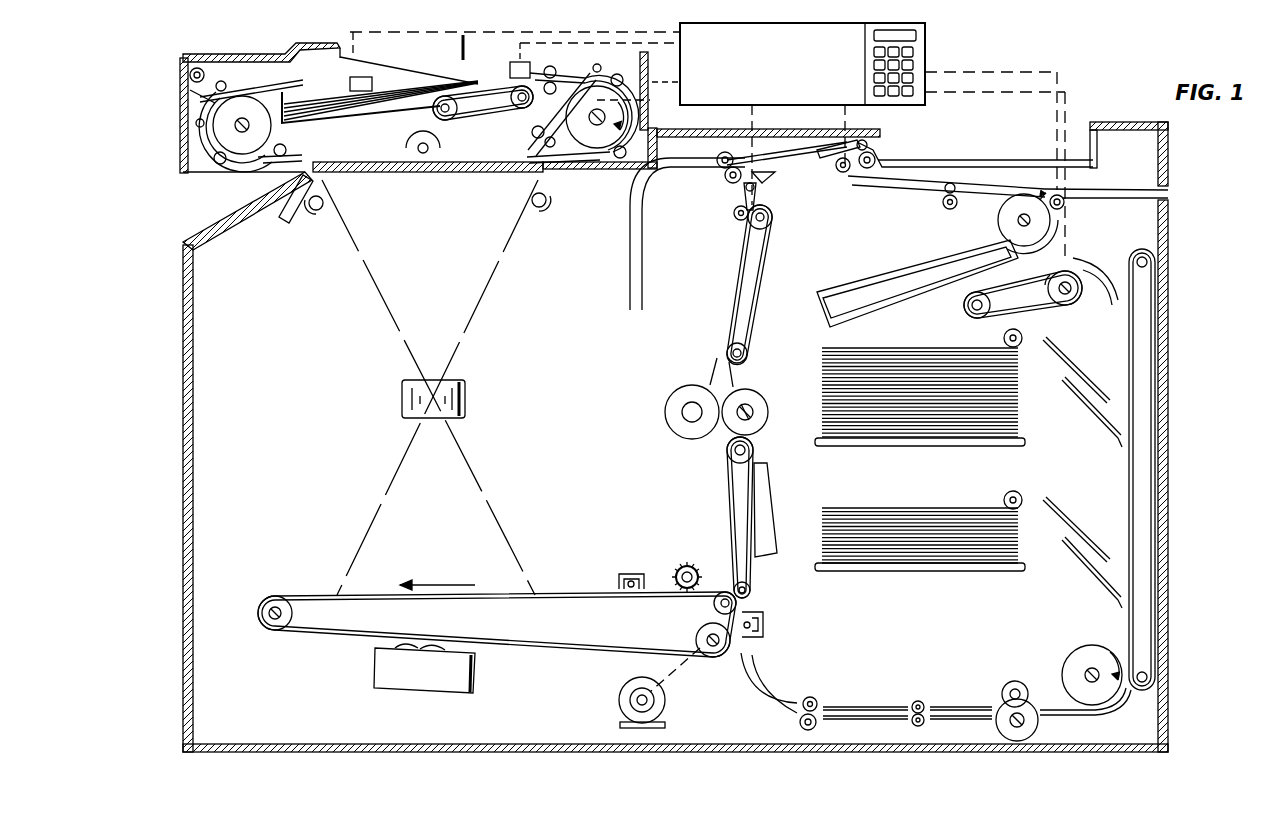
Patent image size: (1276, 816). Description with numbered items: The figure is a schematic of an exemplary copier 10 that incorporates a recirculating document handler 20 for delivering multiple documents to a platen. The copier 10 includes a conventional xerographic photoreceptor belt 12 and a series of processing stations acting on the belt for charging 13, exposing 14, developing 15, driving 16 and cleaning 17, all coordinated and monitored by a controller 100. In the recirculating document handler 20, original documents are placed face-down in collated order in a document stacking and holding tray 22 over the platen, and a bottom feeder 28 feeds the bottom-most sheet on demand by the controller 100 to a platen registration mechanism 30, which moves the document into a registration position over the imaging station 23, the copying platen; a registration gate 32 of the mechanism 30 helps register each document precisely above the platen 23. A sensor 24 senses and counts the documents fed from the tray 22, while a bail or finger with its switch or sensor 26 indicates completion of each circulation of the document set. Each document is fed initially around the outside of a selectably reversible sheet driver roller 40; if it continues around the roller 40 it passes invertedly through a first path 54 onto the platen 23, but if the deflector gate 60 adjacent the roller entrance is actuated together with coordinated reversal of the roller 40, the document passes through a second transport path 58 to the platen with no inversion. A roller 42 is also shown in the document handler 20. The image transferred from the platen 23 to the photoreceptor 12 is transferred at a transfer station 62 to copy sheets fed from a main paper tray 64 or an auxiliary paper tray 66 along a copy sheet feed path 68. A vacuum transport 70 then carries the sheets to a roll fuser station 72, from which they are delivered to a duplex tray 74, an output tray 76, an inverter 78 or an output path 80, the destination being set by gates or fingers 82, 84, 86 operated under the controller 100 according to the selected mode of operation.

The copier 10 is at (1093, 103).
The xerographic photoreceptor belt 12 is at (303, 595).
The charging station 13 is at (633, 572).
The exposing station 14 is at (485, 575).
The developing station 15 is at (470, 685).
The driving station 16 is at (660, 700).
The cleaning station 17 is at (692, 564).
The recirculating document handler 20 is at (175, 152).
The document stacking and holding tray 22 is at (352, 112).
The imaging station 23 is at (430, 172).
The sensor 24 is at (515, 62).
The switch or sensor 26 is at (372, 84).
The bottom feeder 28 is at (478, 112).
The platen registration mechanism 30 is at (412, 138).
The registration gate 32 is at (286, 224).
The sheet driver roller 40 is at (625, 117).
The document return roller 42 is at (240, 152).
The first path 54 is at (590, 170).
The second transport path 58 is at (540, 122).
The gate or deflector 60 is at (666, 83).
The transfer station 62 is at (768, 620).
The main paper tray 64 is at (962, 447).
The auxiliary paper tray 66 is at (965, 573).
The copy sheet feed path 68 is at (845, 705).
The vacuum transport 70 is at (778, 493).
The roll fuser station 72 is at (720, 440).
The duplex tray 74 is at (885, 320).
The output tray 76 is at (978, 165).
The inverter 78 is at (702, 185).
The output path 80 is at (1180, 190).
The gate or finger 82 is at (770, 200).
The gate or finger 84 is at (848, 180).
The gate or finger 86 is at (1064, 206).
The controller 100 is at (927, 38).